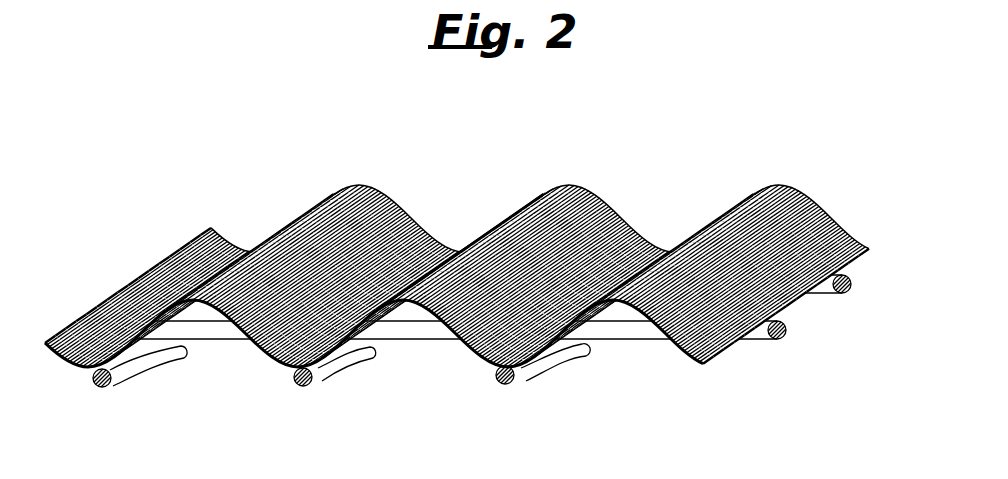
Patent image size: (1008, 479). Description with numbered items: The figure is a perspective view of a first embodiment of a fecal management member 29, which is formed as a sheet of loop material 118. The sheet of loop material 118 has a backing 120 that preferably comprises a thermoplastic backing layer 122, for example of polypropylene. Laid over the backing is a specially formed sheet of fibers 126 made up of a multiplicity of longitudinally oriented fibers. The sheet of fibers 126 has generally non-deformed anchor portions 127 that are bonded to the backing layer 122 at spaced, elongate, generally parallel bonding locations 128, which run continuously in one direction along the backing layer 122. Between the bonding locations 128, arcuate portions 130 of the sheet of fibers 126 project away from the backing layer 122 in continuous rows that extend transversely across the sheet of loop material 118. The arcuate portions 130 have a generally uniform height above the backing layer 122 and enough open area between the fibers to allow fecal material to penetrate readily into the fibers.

The fecal management member 29 is at (461, 287).
The sheet of loop material 118 is at (457, 246).
The backing 120 is at (472, 309).
The thermoplastic backing layer 122 is at (413, 332).
The sheet of fibers 126 is at (587, 227).
The anchor portions 127 is at (325, 367).
The bonding locations 128 is at (305, 368).
The arcuate portions 130 is at (427, 302).